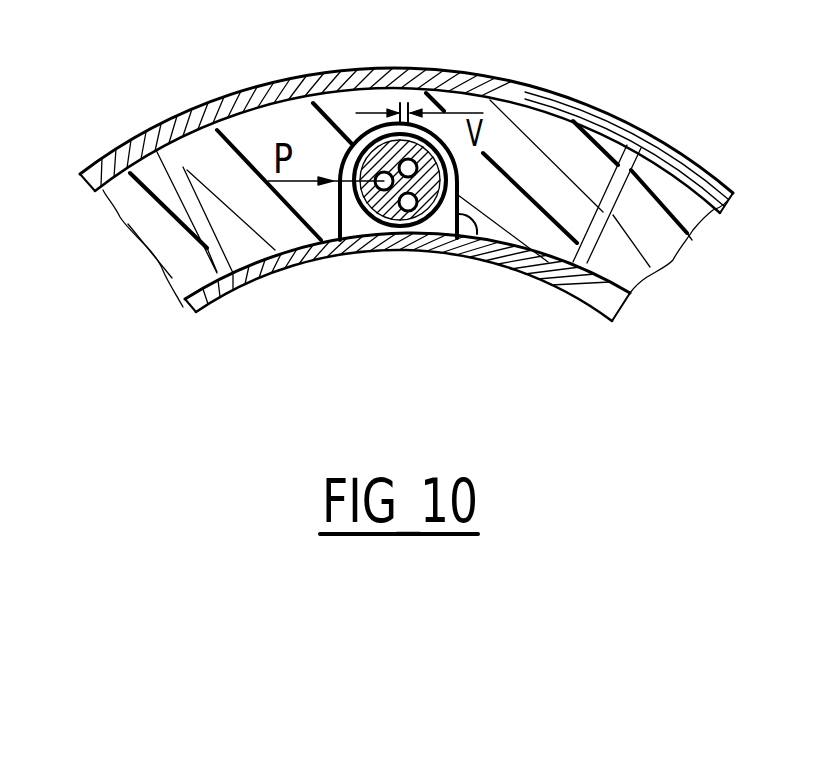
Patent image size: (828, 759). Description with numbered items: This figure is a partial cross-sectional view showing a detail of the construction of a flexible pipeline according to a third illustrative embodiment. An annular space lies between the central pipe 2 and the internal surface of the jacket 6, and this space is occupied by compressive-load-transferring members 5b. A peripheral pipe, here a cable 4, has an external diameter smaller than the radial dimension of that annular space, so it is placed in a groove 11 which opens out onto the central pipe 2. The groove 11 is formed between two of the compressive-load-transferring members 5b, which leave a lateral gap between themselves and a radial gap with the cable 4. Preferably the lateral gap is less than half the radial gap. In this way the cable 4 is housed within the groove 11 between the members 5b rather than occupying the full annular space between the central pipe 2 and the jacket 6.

The central pipe 2 is at (597, 269).
The cable 4 is at (397, 218).
The compressive-load-transferring members 5b is at (240, 140).
The jacket 6 is at (103, 190).
The groove 11 is at (473, 220).